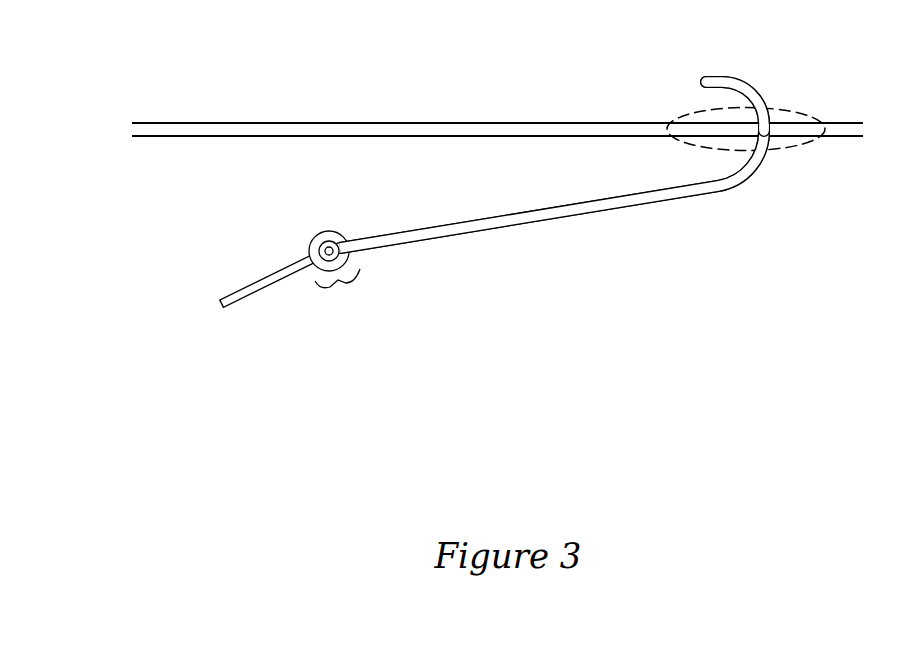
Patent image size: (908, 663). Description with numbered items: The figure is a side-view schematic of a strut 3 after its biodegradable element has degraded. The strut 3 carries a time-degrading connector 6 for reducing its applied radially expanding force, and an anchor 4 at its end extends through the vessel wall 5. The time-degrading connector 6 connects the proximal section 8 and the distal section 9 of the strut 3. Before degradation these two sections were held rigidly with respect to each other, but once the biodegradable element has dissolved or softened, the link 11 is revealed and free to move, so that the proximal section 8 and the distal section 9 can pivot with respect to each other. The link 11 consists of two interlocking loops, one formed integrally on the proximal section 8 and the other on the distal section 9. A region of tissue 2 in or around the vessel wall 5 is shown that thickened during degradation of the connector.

The region of tissue 2 is at (799, 158).
The strut 3 is at (584, 231).
The anchor 4 is at (735, 84).
The vessel wall 5 is at (377, 126).
The time-degrading connector 6 is at (273, 214).
The proximal section 8 is at (258, 282).
The distal section 9 is at (430, 238).
The link 11 is at (338, 276).